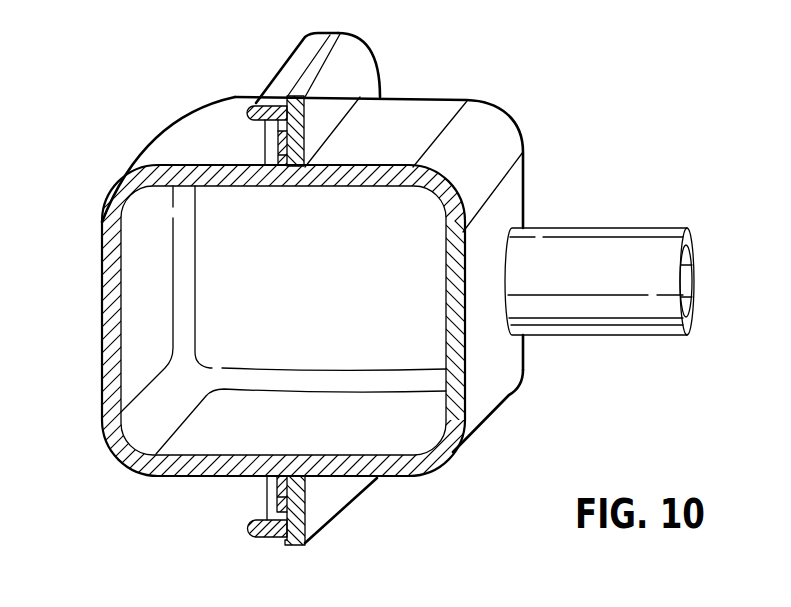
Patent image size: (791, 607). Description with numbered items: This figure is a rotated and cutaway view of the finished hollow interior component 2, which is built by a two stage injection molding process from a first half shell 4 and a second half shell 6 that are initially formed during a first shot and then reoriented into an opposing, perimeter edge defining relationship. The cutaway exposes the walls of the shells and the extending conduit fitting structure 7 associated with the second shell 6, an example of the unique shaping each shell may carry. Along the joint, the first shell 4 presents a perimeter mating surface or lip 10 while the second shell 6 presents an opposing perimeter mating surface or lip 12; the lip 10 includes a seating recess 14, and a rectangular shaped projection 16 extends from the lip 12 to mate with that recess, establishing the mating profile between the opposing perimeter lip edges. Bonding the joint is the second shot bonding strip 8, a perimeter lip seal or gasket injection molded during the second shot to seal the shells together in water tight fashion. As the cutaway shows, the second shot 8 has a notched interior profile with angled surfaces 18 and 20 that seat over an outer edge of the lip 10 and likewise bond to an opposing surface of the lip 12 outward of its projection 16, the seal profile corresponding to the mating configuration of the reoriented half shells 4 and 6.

The component 2 is at (360, 509).
The first half shell 4 is at (108, 338).
The second half shell 6 is at (508, 365).
The conduit fitting structure 7 is at (608, 247).
The second shot bonding strip 8 is at (293, 57).
The perimeter mating surface of first shell 10 is at (262, 150).
The perimeter mating surface of second shell 12 is at (372, 63).
The seating recess 14 is at (306, 160).
The rectangular shaped projection 16 is at (277, 165).
The angled surface 18 is at (273, 118).
The angled surface 20 is at (258, 130).